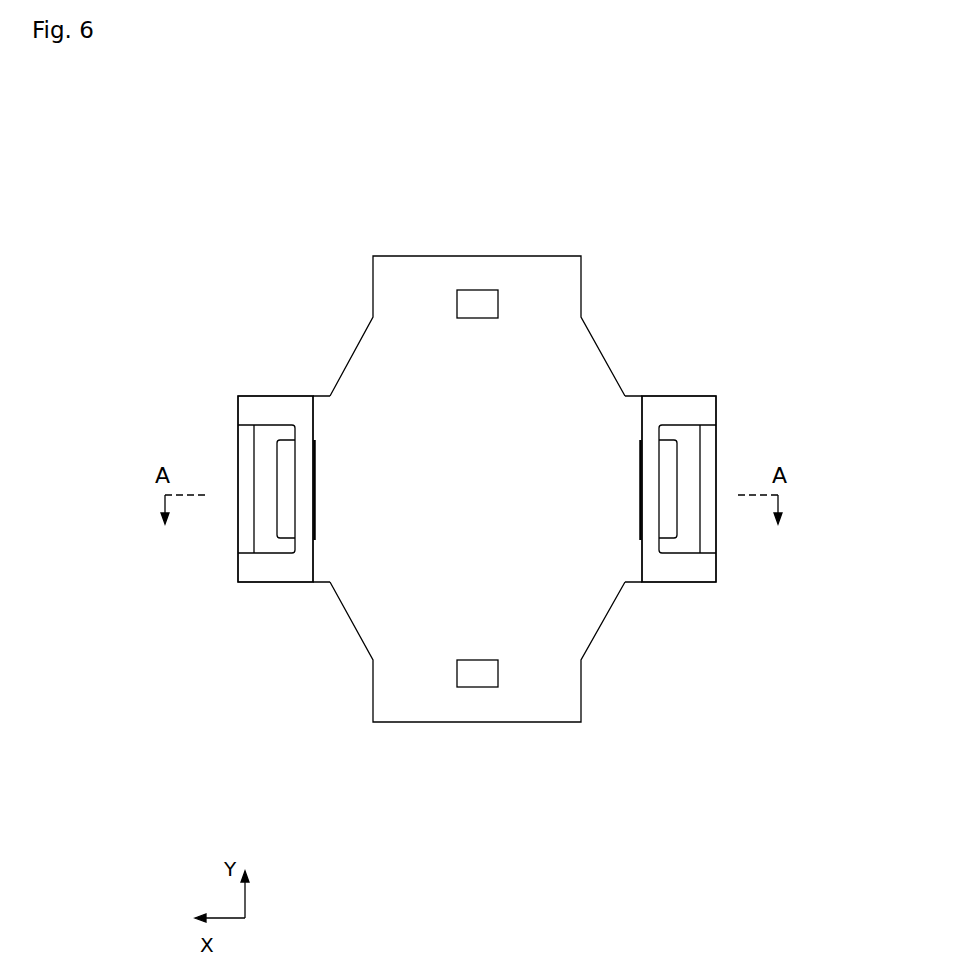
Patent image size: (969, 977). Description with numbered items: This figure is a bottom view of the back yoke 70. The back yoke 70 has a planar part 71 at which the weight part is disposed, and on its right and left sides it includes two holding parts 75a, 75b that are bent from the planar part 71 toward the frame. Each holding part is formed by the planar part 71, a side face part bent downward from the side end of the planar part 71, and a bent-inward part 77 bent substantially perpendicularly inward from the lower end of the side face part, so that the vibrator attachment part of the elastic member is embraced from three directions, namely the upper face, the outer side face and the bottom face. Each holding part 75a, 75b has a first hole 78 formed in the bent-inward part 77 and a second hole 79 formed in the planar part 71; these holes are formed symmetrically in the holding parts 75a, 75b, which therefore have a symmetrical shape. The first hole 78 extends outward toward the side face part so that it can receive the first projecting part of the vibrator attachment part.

The back yoke 70 is at (183, 127).
The planar part 71 is at (415, 565).
The holding part 75a is at (268, 381).
The holding part 75b is at (683, 381).
The bent-inward part 77 is at (253, 410).
The first hole 78 is at (267, 548).
The second hole 79 is at (280, 470).